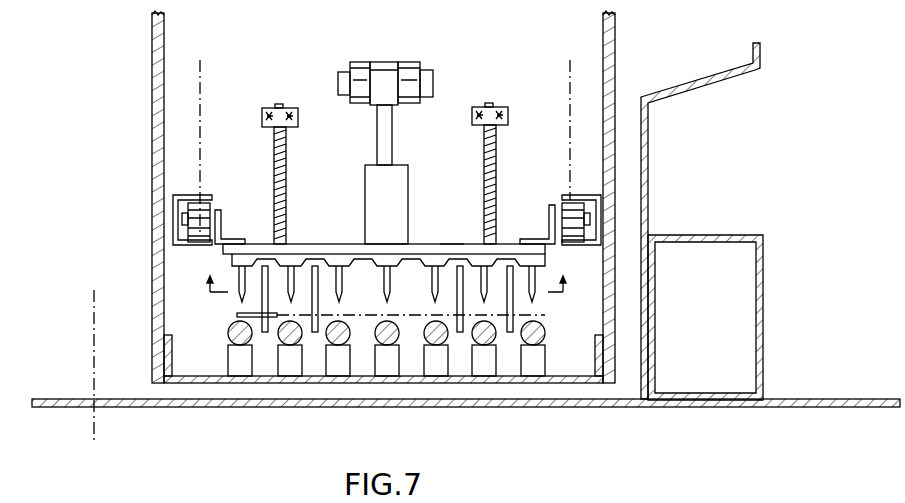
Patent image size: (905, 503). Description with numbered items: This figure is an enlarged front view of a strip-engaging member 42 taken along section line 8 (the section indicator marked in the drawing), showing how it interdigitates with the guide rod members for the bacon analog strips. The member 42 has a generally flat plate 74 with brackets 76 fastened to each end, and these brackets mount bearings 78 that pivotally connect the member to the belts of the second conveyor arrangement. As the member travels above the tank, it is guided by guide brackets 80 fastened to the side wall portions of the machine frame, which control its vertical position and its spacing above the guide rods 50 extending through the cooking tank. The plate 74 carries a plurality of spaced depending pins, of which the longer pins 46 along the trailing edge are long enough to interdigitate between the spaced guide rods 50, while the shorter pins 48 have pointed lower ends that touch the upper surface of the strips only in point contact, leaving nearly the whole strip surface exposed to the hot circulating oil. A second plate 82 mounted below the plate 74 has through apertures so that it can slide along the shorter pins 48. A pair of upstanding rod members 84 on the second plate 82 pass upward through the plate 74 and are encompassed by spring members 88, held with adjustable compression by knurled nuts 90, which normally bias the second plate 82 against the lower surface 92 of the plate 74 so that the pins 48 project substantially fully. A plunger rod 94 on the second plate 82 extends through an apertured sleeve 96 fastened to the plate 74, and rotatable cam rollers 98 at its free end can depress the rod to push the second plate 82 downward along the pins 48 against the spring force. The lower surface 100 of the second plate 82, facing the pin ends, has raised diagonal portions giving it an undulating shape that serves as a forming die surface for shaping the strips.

The section line 8 is at (386, 272).
The strip-engaging member 42 is at (452, 244).
The longer pins 46 is at (511, 335).
The shorter pins 48 is at (243, 297).
The guide rods 50 is at (228, 338).
The flat plate 74 is at (310, 244).
The brackets 76 is at (233, 239).
The bearings 78 is at (210, 207).
The guide brackets 80 is at (193, 250).
The second plate 82 is at (538, 268).
The rod members 84 is at (287, 147).
The spring members 88 is at (287, 169).
The knurled nuts 90 is at (269, 108).
The lower surface 92 is at (413, 252).
The plunger rod 94 is at (393, 134).
The apertured sleeve 96 is at (365, 228).
The cam rollers 98 is at (410, 62).
The lower surface 100 is at (278, 268).